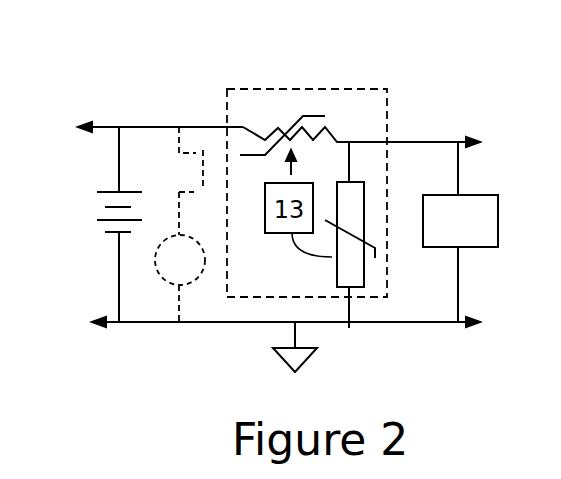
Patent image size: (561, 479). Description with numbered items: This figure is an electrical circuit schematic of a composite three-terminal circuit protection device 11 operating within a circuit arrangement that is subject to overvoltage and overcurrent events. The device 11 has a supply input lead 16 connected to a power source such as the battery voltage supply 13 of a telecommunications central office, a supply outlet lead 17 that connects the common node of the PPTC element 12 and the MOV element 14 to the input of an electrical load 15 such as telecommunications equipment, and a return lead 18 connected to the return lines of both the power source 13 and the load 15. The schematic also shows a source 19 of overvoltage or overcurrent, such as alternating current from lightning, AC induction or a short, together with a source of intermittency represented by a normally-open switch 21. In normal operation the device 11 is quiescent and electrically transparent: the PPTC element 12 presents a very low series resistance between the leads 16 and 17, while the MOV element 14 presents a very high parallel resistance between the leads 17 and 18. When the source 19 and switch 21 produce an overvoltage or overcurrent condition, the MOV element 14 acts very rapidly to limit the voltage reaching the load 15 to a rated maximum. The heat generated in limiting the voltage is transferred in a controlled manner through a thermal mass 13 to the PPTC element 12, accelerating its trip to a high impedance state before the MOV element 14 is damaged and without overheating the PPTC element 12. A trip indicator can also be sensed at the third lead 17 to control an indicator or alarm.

The composite three-terminal circuit protection device 11 is at (398, 122).
The PPTC element 12 is at (265, 135).
The battery voltage supply 13 is at (100, 192).
The MOV element 14 is at (358, 207).
The electrical load 15 is at (498, 200).
The supply input lead 16 is at (202, 131).
The supply outlet lead 17 is at (406, 142).
The return lead 18 is at (190, 324).
The source of overvoltage/overcurrent 19 is at (178, 287).
The normally-open switch 21 is at (203, 169).